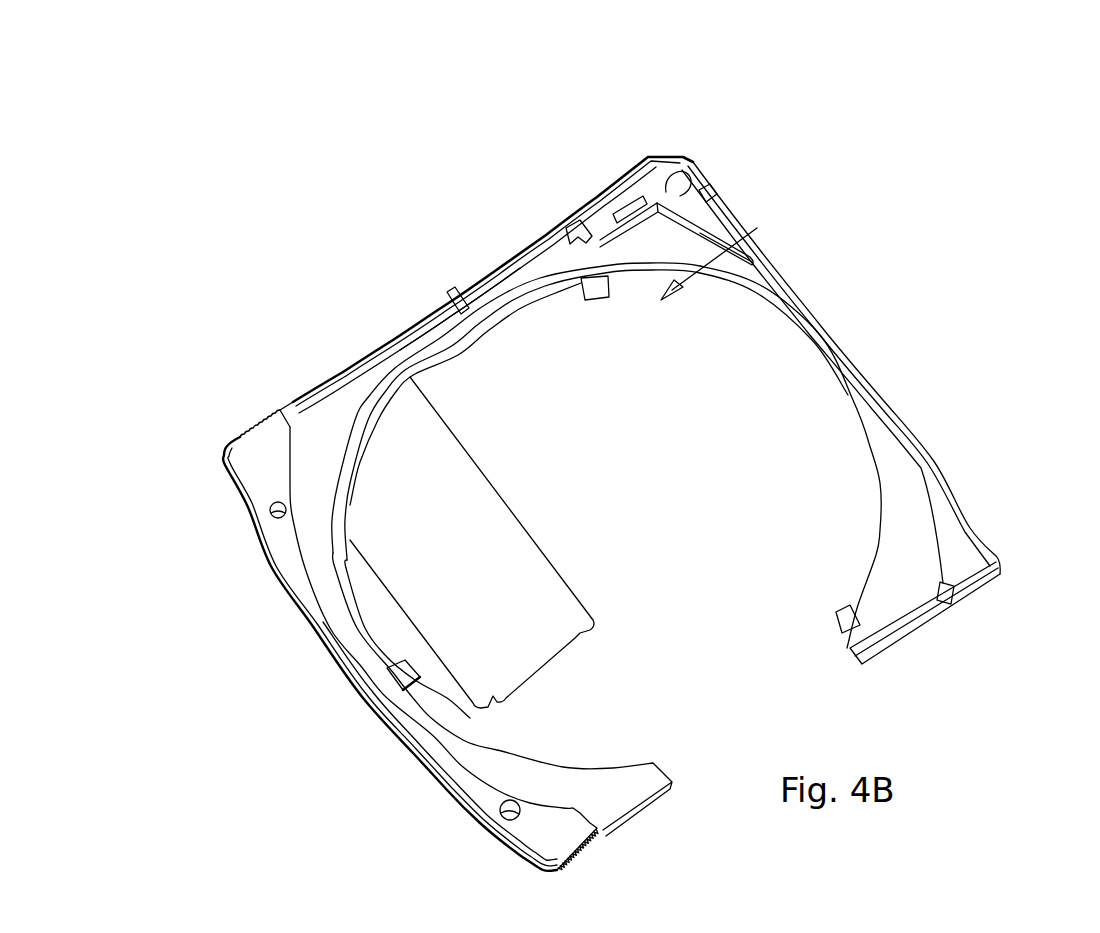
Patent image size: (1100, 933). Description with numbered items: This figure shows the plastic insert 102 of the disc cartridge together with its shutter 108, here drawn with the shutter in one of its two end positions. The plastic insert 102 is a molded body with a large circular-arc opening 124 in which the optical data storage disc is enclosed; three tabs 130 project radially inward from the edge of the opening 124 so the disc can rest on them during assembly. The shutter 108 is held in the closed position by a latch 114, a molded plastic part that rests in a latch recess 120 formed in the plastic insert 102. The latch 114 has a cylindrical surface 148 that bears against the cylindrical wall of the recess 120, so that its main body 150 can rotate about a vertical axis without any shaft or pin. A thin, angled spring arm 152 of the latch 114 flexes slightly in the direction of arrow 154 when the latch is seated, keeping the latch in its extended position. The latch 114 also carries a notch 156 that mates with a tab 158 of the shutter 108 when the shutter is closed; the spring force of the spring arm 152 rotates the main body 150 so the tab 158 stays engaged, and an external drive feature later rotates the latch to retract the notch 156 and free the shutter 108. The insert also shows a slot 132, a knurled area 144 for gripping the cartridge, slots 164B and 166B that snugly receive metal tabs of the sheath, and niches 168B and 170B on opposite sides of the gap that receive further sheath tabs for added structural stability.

The plastic insert 102 is at (877, 392).
The shutter 108 is at (563, 578).
The latch 114 is at (648, 330).
The latch recess 120 is at (648, 332).
The opening 124 is at (608, 435).
The tabs 130 is at (590, 300).
The slot 132 is at (490, 265).
The knurled areas 144 is at (244, 419).
The cylindrical surface 148 is at (690, 178).
The main body 150 is at (585, 197).
The spring arm 152 is at (742, 222).
The arrow 154 is at (782, 285).
The notch 156 is at (577, 223).
The tab 158 is at (450, 293).
The slot 164B is at (712, 192).
The slot 166B is at (278, 405).
The niche 168B is at (962, 606).
The niche 170B is at (602, 836).